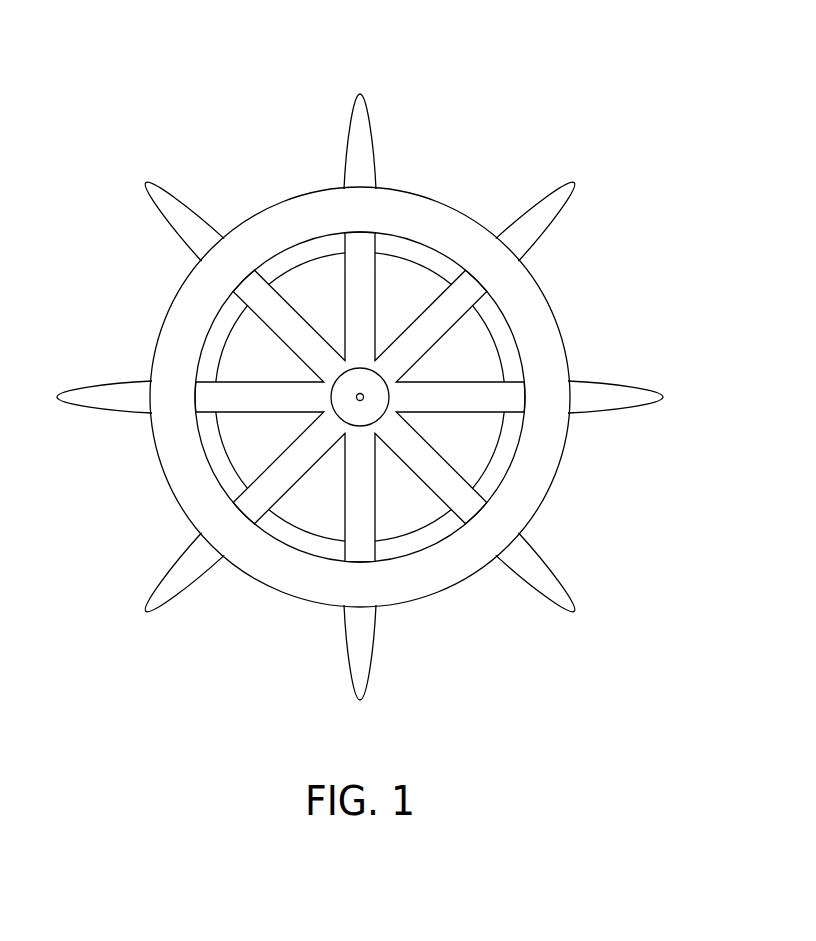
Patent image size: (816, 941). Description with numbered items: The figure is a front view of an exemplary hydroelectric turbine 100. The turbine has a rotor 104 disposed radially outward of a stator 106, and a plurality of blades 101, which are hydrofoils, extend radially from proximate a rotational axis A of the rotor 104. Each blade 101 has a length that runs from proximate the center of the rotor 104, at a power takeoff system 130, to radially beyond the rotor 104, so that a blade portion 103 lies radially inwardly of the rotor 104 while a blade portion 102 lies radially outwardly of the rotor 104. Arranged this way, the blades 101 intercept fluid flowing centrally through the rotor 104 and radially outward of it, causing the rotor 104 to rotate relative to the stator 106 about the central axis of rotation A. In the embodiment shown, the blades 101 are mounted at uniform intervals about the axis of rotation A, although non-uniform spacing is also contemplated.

The hydroelectric turbine 100 is at (385, 354).
The blades 101 is at (360, 364).
The blade portion 102 is at (362, 127).
The blade portion 103 is at (372, 268).
The rotor 104 is at (543, 340).
The stator 106 is at (507, 455).
The power takeoff system 130 is at (347, 393).
The rotational axis A is at (361, 403).